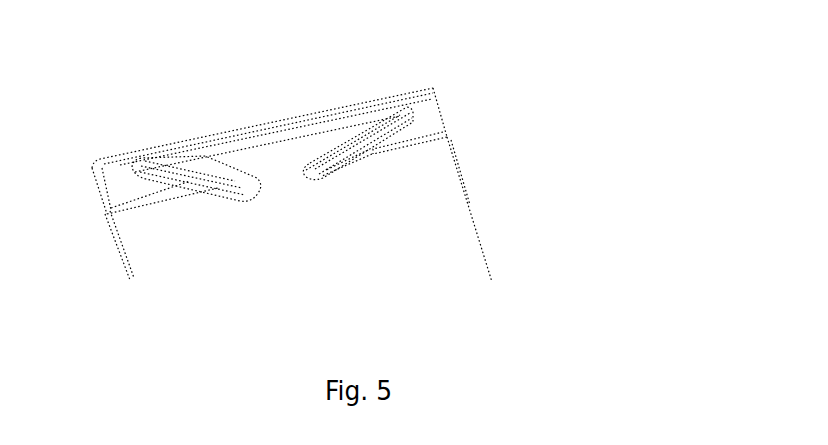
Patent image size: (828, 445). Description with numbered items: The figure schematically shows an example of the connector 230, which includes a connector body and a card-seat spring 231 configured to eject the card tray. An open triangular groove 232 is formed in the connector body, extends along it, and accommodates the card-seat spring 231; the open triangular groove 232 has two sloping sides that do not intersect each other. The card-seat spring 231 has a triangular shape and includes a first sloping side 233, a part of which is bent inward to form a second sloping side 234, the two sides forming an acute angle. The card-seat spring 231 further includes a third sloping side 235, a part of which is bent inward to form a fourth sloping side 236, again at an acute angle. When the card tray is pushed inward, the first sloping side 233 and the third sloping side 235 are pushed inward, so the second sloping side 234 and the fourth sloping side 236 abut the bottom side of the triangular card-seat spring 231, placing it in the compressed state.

The connector 230 is at (443, 211).
The card-seat spring 231 is at (256, 136).
The open triangular groove 232 is at (403, 105).
The first sloping side 233 is at (332, 173).
The second sloping side 234 is at (332, 136).
The third sloping side 235 is at (218, 198).
The fourth sloping side 236 is at (202, 160).